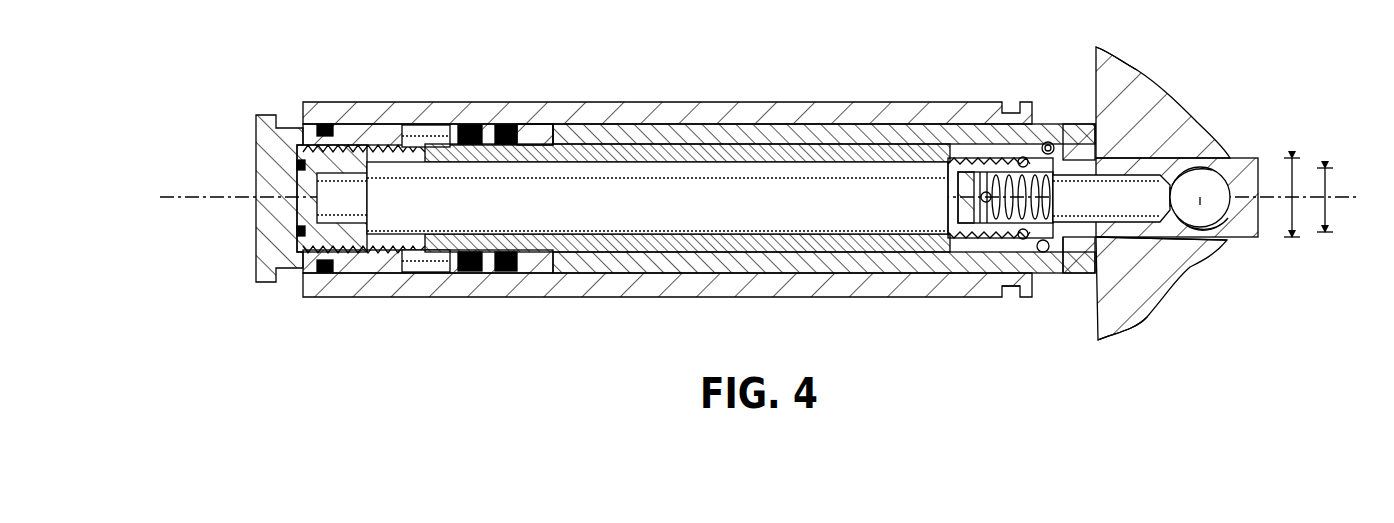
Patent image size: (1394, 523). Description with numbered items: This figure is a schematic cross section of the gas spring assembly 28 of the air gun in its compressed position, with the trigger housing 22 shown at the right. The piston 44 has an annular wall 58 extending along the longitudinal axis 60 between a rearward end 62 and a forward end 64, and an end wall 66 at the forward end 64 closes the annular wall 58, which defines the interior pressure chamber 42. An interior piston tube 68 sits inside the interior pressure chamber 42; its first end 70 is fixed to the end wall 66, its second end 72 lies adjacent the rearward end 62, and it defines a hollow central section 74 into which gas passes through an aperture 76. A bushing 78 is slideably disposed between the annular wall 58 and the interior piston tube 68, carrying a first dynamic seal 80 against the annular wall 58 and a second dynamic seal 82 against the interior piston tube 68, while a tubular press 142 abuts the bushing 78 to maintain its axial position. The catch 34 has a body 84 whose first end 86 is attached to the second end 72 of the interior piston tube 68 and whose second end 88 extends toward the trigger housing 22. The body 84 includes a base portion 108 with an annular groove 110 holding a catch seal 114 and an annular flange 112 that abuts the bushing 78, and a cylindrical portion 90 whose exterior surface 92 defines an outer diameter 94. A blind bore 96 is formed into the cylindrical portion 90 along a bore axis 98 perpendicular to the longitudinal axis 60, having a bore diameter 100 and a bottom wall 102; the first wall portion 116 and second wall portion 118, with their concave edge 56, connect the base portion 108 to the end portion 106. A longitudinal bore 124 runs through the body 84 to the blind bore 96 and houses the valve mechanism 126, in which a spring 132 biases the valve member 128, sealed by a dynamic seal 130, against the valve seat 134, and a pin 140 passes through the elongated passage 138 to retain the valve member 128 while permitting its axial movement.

The trigger housing 22 is at (1140, 62).
The gas spring assembly 28 is at (743, 63).
The catch 34 is at (1088, 250).
The interior pressure chamber 42 is at (430, 133).
The piston 44 is at (565, 102).
The concave edge 56 is at (1175, 330).
The annular wall 58 is at (645, 118).
The longitudinal axis 60 is at (214, 196).
The rearward end 62 is at (1035, 295).
The forward end 64 is at (310, 280).
The end wall 66 is at (267, 245).
The interior piston tube 68 is at (610, 245).
The first end 70 is at (297, 243).
The second end 72 is at (1058, 148).
The hollow central section 74 is at (581, 220).
The aperture 76 is at (412, 147).
The bushing 78 is at (540, 138).
The first dynamic seal 80 is at (470, 130).
The second dynamic seal 82 is at (503, 130).
The body 84 is at (1095, 265).
The first end 86 is at (960, 228).
The second end 88 is at (1260, 237).
The cylindrical portion 90 is at (1200, 250).
The exterior surface 92 is at (1200, 162).
The outer diameter 94 is at (1298, 175).
The blind bore 96 is at (1218, 245).
The bore axis 98 is at (1200, 197).
The bore diameter 100 is at (1328, 180).
The bottom wall 102 is at (1130, 147).
The end portion 106 is at (1240, 240).
The base portion 108 is at (958, 262).
The annular groove 110 is at (1005, 262).
The annular flange 112 is at (1032, 298).
The catch seal 114 is at (1048, 142).
The first wall portion 116 is at (1190, 157).
The second wall portion 118 is at (1208, 255).
The longitudinal bore 124 is at (990, 255).
The valve mechanism 126 is at (1078, 128).
The valve member 128 is at (1048, 255).
The dynamic seal 130 is at (1023, 158).
The spring 132 is at (968, 175).
The valve seat 134 is at (1160, 192).
The elongated passage 138 is at (955, 262).
The pin 140 is at (985, 200).
The tubular press 142 is at (800, 140).